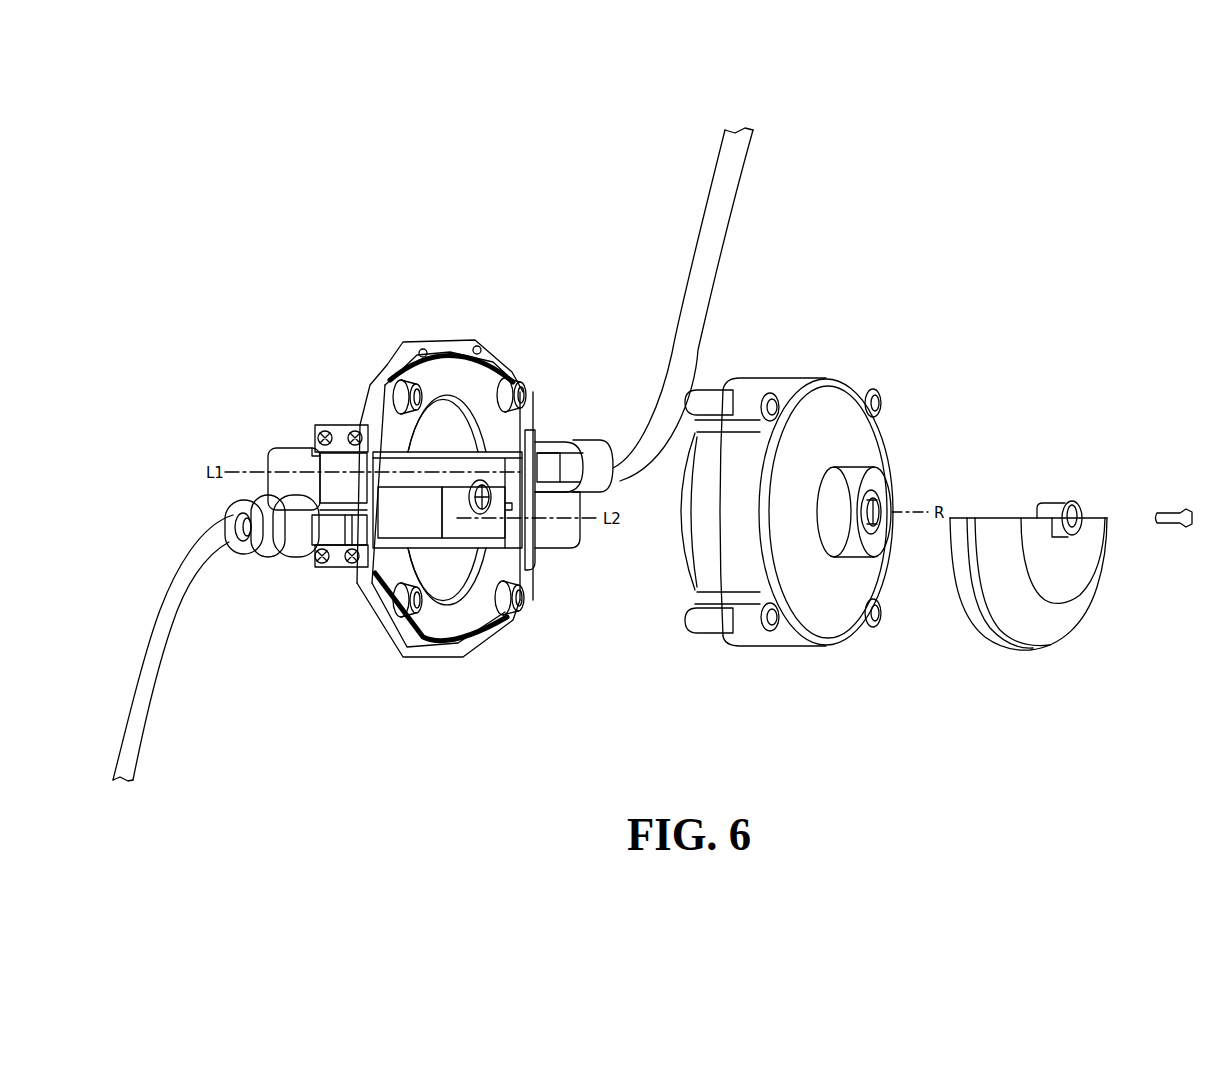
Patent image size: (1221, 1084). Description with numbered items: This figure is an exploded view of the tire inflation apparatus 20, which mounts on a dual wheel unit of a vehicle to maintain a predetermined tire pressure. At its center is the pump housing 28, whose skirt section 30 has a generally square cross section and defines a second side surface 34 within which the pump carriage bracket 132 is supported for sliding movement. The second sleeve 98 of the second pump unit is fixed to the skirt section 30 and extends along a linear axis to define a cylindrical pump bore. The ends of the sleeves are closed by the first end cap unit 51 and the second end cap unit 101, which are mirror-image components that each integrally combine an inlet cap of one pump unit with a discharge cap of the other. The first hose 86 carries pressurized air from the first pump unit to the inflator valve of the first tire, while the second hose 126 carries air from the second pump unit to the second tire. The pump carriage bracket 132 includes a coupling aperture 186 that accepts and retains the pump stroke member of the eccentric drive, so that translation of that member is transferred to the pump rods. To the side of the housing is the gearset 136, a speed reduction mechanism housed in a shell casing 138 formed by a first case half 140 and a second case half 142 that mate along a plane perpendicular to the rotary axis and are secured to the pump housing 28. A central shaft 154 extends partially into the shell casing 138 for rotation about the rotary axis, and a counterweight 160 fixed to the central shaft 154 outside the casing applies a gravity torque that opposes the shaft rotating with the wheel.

The tire inflation apparatus 20 is at (921, 221).
The pump housing 28 is at (377, 347).
The skirt section 30 is at (441, 337).
The second side surface 34 is at (457, 625).
The first end cap unit 51 is at (290, 438).
The first hose 86 is at (645, 416).
The second sleeve 98 is at (398, 528).
The second end cap unit 101 is at (567, 566).
The second hose 126 is at (178, 613).
The pump carriage bracket 132 is at (463, 513).
The gearset 136 is at (830, 462).
The shell casing 138 is at (792, 369).
The first case half 140 is at (752, 382).
The second case half 142 is at (820, 385).
The central shaft 154 is at (878, 518).
The counterweight 160 is at (1050, 620).
The coupling aperture 186 is at (487, 487).